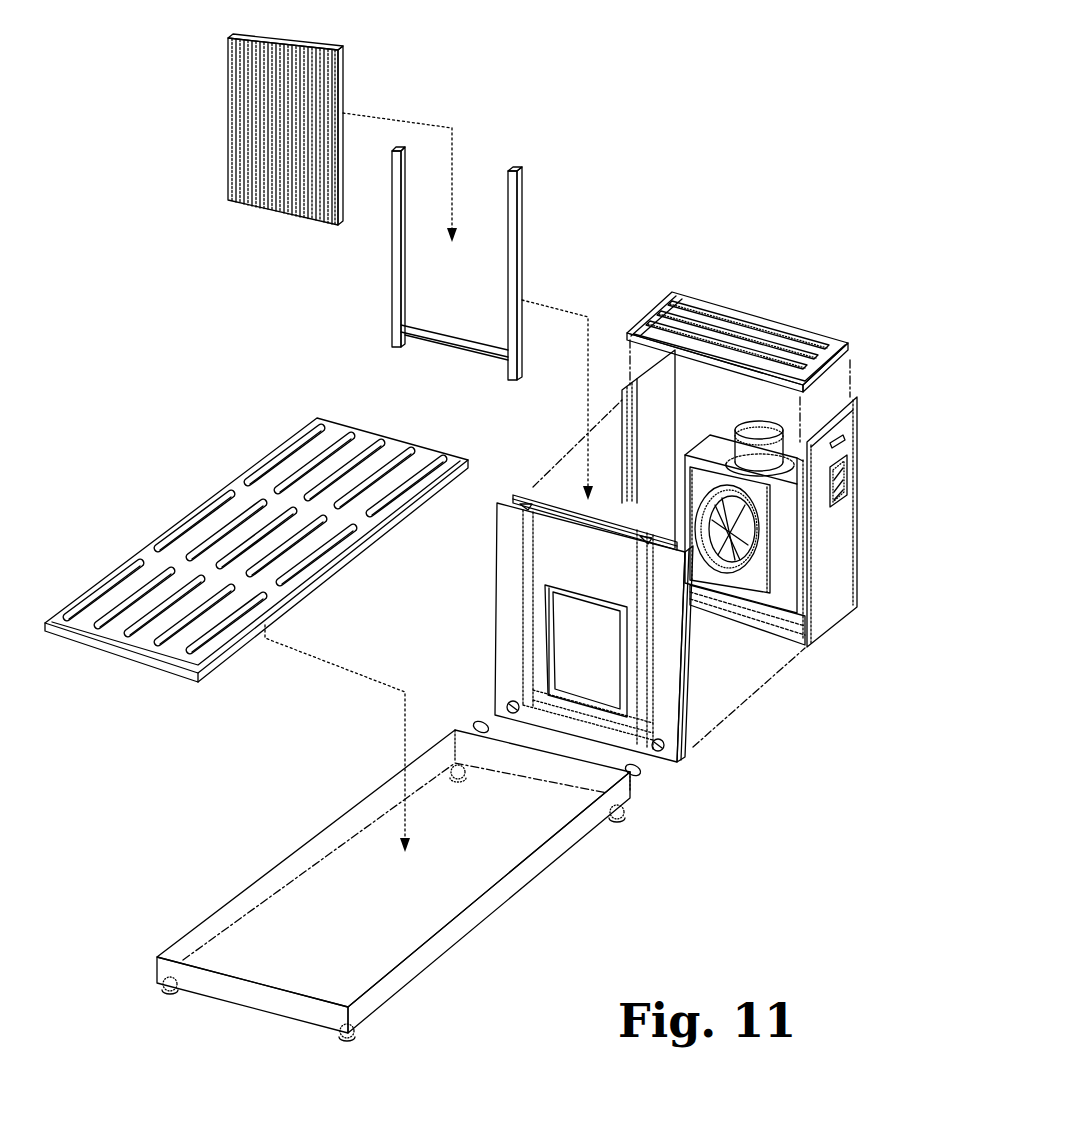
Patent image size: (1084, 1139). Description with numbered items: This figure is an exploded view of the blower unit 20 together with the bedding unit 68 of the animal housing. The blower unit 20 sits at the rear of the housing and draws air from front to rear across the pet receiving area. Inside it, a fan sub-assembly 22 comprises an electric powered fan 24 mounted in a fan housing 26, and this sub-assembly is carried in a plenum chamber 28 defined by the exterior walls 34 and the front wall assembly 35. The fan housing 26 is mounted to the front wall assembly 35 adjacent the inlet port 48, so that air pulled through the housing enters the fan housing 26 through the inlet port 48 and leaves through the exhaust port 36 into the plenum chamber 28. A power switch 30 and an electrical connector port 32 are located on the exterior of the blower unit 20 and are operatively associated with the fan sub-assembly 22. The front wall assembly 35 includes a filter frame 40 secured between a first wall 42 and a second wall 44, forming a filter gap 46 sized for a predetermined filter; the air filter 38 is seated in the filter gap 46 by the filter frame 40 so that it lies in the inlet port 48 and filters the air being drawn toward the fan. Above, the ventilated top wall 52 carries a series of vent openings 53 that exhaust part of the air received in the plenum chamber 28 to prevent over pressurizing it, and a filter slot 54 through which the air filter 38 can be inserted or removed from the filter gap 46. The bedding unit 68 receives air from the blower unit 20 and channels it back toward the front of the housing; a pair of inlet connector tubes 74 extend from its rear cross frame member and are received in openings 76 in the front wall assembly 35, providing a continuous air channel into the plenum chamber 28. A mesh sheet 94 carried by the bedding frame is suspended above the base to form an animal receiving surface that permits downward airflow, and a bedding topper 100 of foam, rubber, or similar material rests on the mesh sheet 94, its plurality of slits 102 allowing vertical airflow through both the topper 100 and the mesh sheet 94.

The blower unit 20 is at (829, 553).
The fan sub-assembly 22 is at (805, 524).
The electric powered fan 24 is at (718, 540).
The fan housing 26 is at (780, 577).
The plenum chamber 28 is at (650, 400).
The power switch 30 is at (845, 440).
The electrical connector port 32 is at (845, 495).
The exterior walls 34 is at (823, 410).
The front wall assembly 35 is at (668, 690).
The exhaust port 36 is at (765, 430).
The air filter 38 is at (255, 80).
The filter frame 40 is at (518, 172).
The first wall 42 is at (575, 650).
The second wall 44 is at (520, 497).
The filter gap 46 is at (565, 505).
The inlet port 48 is at (600, 668).
The ventilated top wall 52 is at (745, 303).
The vent openings 53 is at (753, 340).
The filter slot 54 is at (642, 333).
The bedding unit 68 is at (358, 910).
The inlet connector tubes 74 is at (480, 722).
The openings 76 is at (505, 700).
The mesh sheet 94 is at (310, 912).
The bedding topper 100 is at (256, 619).
The slits 102 is at (242, 522).